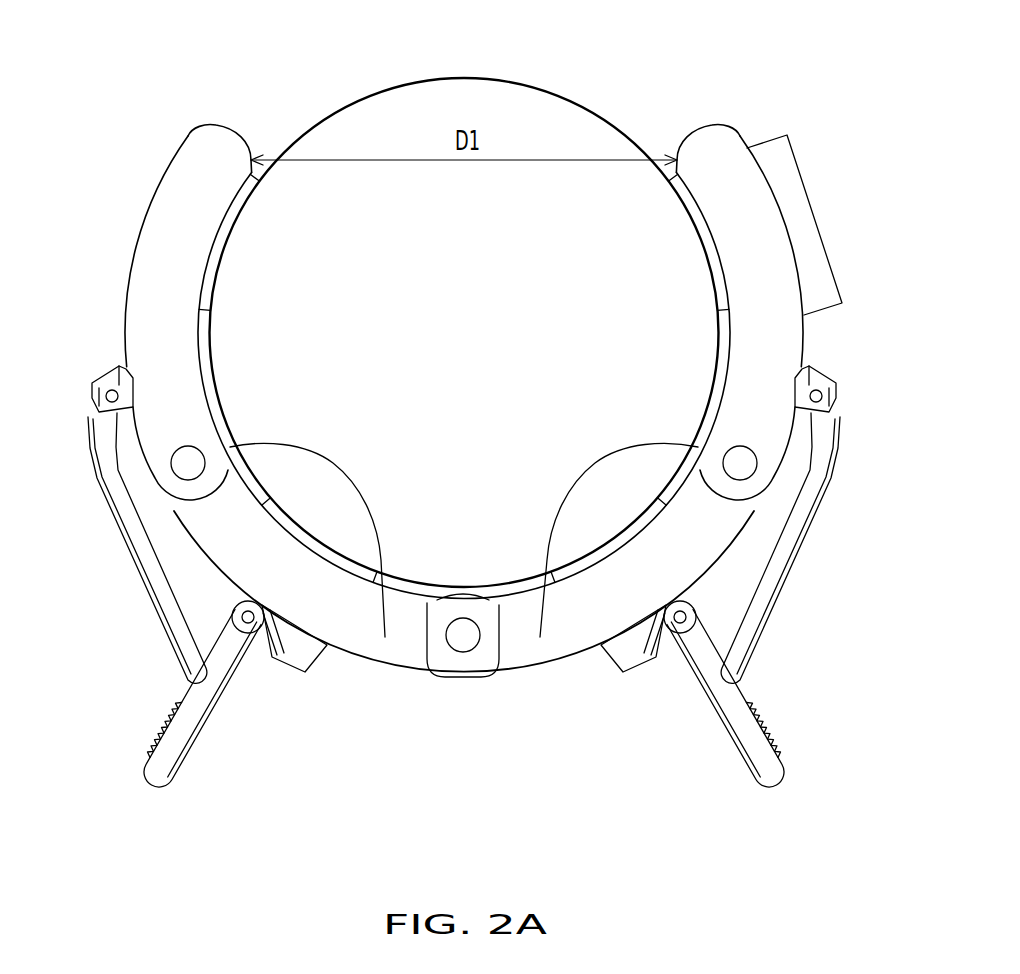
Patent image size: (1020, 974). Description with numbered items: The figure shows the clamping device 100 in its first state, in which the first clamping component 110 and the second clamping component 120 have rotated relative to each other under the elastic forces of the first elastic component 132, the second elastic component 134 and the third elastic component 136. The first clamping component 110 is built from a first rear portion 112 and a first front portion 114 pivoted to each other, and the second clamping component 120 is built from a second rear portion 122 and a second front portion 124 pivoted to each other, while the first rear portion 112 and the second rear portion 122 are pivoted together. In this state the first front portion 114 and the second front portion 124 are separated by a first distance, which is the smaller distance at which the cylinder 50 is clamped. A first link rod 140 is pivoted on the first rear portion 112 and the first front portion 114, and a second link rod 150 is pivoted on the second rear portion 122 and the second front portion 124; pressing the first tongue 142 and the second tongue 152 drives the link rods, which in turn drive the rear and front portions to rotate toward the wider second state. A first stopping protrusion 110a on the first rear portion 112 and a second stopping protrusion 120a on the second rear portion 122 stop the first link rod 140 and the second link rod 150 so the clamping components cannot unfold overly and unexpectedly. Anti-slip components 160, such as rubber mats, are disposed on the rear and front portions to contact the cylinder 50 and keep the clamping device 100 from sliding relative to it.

The cylinder 50 is at (547, 90).
The clamping device 100 is at (464, 449).
The first clamping component 110 is at (800, 367).
The first stopping protrusion 110a is at (635, 650).
The first rear portion 112 is at (703, 540).
The first front portion 114 is at (763, 427).
The second clamping component 120 is at (128, 377).
The second stopping protrusion 120a is at (295, 650).
The second rear portion 122 is at (220, 530).
The second front portion 124 is at (163, 432).
The first elastic component 132 is at (540, 637).
The second elastic component 134 is at (385, 637).
The third elastic component 136 is at (464, 680).
The first link rod 140 is at (755, 620).
The first tongue 142 is at (768, 768).
The second link rod 150 is at (170, 614).
The second tongue 152 is at (178, 748).
The anti-slip component 160 is at (227, 233).